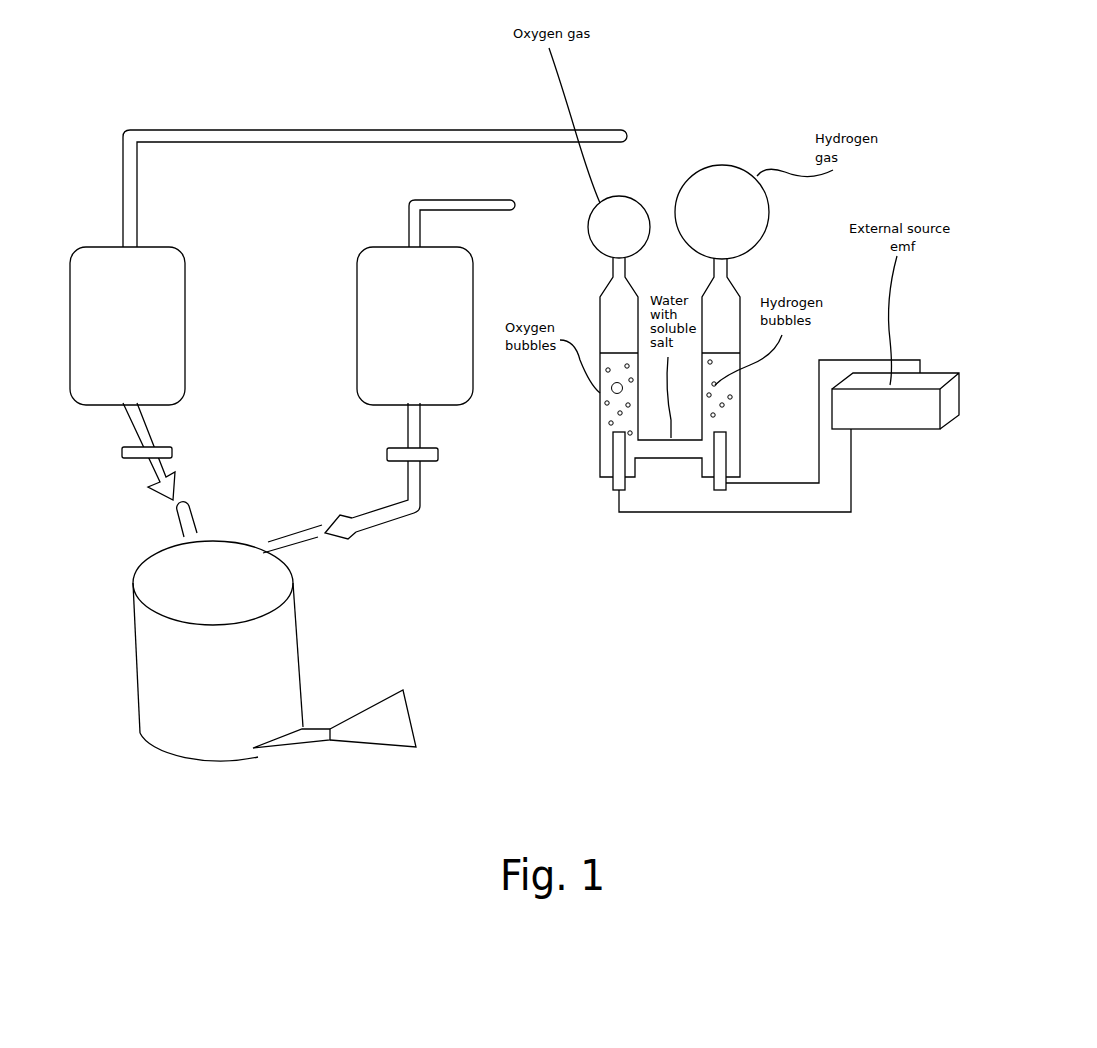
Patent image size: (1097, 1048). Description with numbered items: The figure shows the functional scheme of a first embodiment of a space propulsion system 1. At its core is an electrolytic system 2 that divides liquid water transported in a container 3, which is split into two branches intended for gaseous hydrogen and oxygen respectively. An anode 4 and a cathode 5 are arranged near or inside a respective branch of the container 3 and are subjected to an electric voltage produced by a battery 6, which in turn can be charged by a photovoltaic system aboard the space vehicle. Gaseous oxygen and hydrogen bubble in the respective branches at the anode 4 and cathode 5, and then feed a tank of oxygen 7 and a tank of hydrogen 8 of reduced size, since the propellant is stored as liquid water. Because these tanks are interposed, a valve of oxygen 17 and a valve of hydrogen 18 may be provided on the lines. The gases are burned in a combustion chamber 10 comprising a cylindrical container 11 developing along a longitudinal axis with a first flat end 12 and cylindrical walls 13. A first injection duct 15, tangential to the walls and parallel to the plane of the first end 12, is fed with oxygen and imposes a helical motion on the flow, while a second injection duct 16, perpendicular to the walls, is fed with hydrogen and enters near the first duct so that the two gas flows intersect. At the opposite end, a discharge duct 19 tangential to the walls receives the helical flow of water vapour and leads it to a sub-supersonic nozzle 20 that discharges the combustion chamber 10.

The space propulsion system 1 is at (677, 717).
The electrolytic system 2 is at (815, 548).
The container 3 is at (670, 493).
The anode 4 is at (616, 470).
The cathode 5 is at (722, 463).
The battery 6 is at (893, 417).
The tank of oxygen 7 is at (388, 290).
The tank of hydrogen 8 is at (128, 288).
The combustion chamber 10 is at (467, 653).
The cylindrical container 11 is at (153, 757).
The first flat end 12 is at (197, 583).
The cylindrical walls 13 is at (157, 693).
The first injection duct 15 is at (302, 538).
The second injection duct 16 is at (177, 527).
The valve of oxygen 17 is at (440, 452).
The valve of hydrogen 18 is at (122, 452).
The discharge duct 19 is at (310, 728).
The sub-supersonic nozzle 20 is at (393, 725).